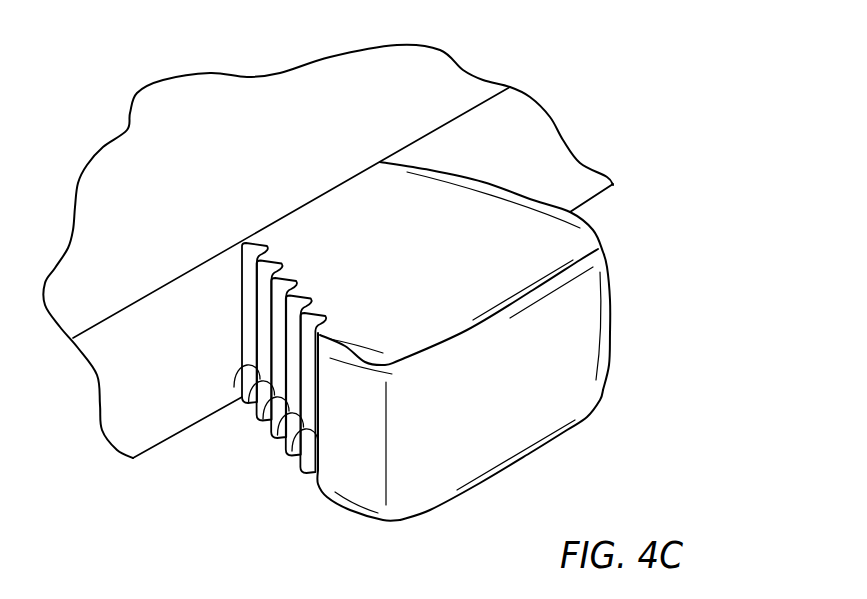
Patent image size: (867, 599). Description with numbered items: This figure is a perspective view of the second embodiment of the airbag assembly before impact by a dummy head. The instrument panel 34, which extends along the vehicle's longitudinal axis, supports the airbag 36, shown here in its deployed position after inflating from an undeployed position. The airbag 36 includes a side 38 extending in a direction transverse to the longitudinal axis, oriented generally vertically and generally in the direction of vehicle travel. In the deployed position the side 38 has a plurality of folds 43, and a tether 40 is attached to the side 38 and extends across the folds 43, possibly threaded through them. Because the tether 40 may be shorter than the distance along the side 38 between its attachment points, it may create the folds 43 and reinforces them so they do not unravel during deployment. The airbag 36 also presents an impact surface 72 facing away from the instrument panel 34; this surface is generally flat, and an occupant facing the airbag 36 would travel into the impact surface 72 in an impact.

The instrument panel 34 is at (600, 193).
The airbag 36 is at (482, 358).
The side 38 is at (332, 498).
The tether 40 is at (313, 400).
The folds 43 is at (292, 451).
The impact surface 72 is at (580, 428).